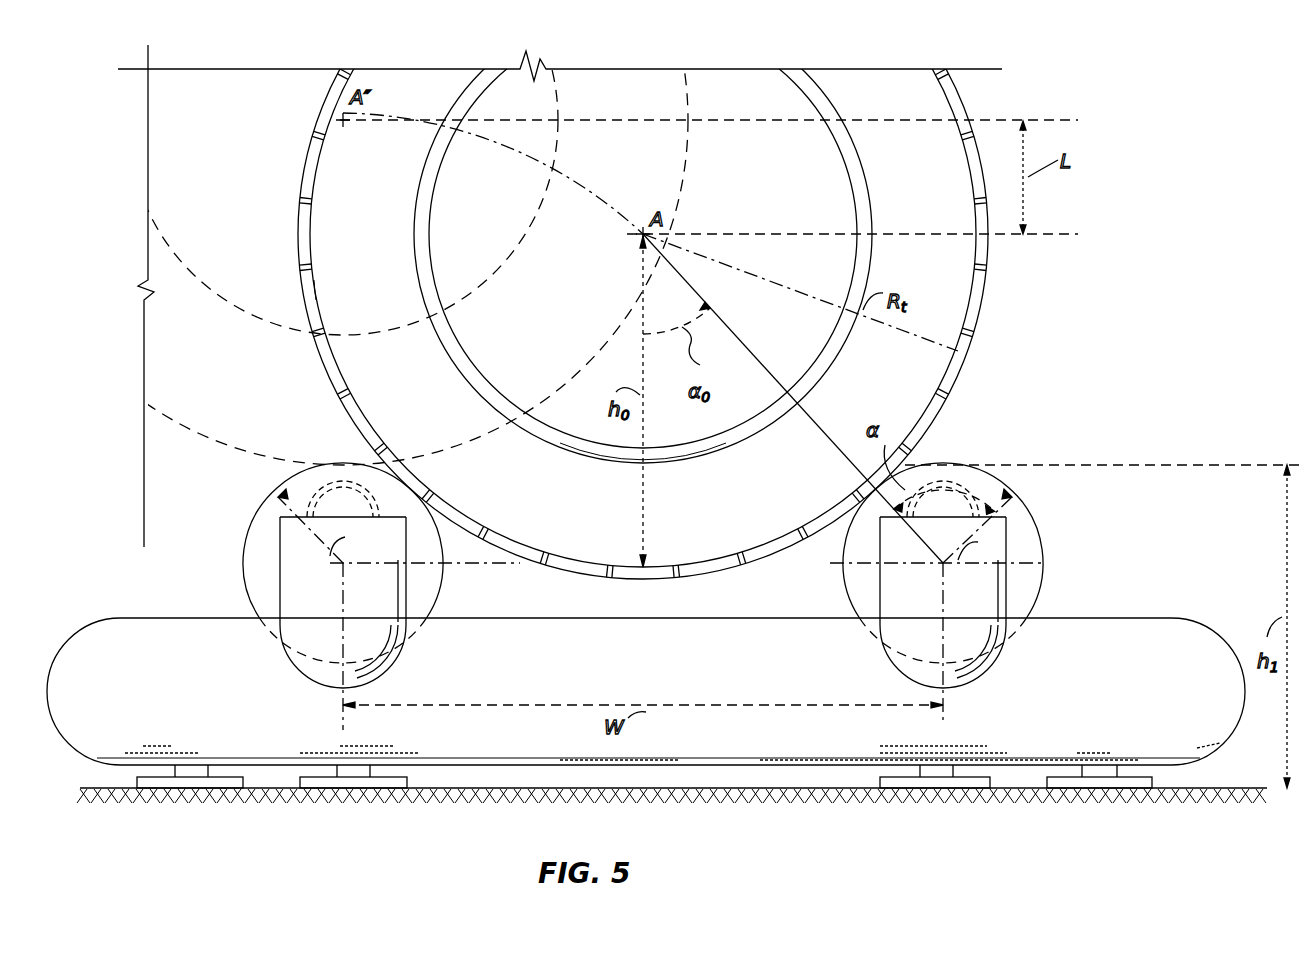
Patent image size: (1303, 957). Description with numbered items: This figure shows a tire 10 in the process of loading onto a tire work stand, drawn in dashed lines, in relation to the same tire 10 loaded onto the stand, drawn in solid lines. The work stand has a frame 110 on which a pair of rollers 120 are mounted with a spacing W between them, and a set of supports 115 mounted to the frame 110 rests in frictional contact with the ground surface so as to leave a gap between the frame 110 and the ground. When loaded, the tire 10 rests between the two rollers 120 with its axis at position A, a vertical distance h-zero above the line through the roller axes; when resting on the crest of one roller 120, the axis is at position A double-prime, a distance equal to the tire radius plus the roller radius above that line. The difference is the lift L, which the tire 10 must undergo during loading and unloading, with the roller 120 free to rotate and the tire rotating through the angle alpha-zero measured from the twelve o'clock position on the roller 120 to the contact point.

The tire 10 is at (983, 277).
The frame 110 is at (664, 674).
The supports 115 is at (218, 778).
The roller 120 is at (245, 562).